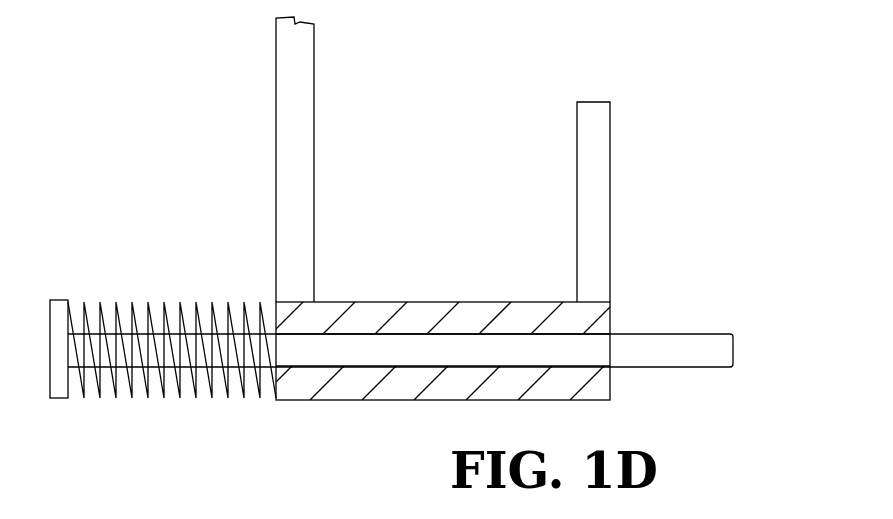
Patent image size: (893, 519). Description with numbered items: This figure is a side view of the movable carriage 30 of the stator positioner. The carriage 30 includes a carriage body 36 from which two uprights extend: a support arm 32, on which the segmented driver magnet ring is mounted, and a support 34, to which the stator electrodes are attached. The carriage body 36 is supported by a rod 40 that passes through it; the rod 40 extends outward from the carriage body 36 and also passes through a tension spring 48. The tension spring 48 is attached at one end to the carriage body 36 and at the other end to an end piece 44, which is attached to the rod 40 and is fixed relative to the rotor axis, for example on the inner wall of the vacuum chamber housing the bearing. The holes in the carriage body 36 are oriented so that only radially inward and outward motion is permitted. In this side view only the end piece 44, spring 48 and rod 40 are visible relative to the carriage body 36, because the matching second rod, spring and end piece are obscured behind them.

The carriage 30 is at (672, 101).
The support arm 32 is at (626, 202).
The support 34 is at (263, 159).
The carriage body 36 is at (443, 322).
The rod 40 is at (400, 326).
The end piece 44 is at (68, 316).
The tension spring 48 is at (172, 320).